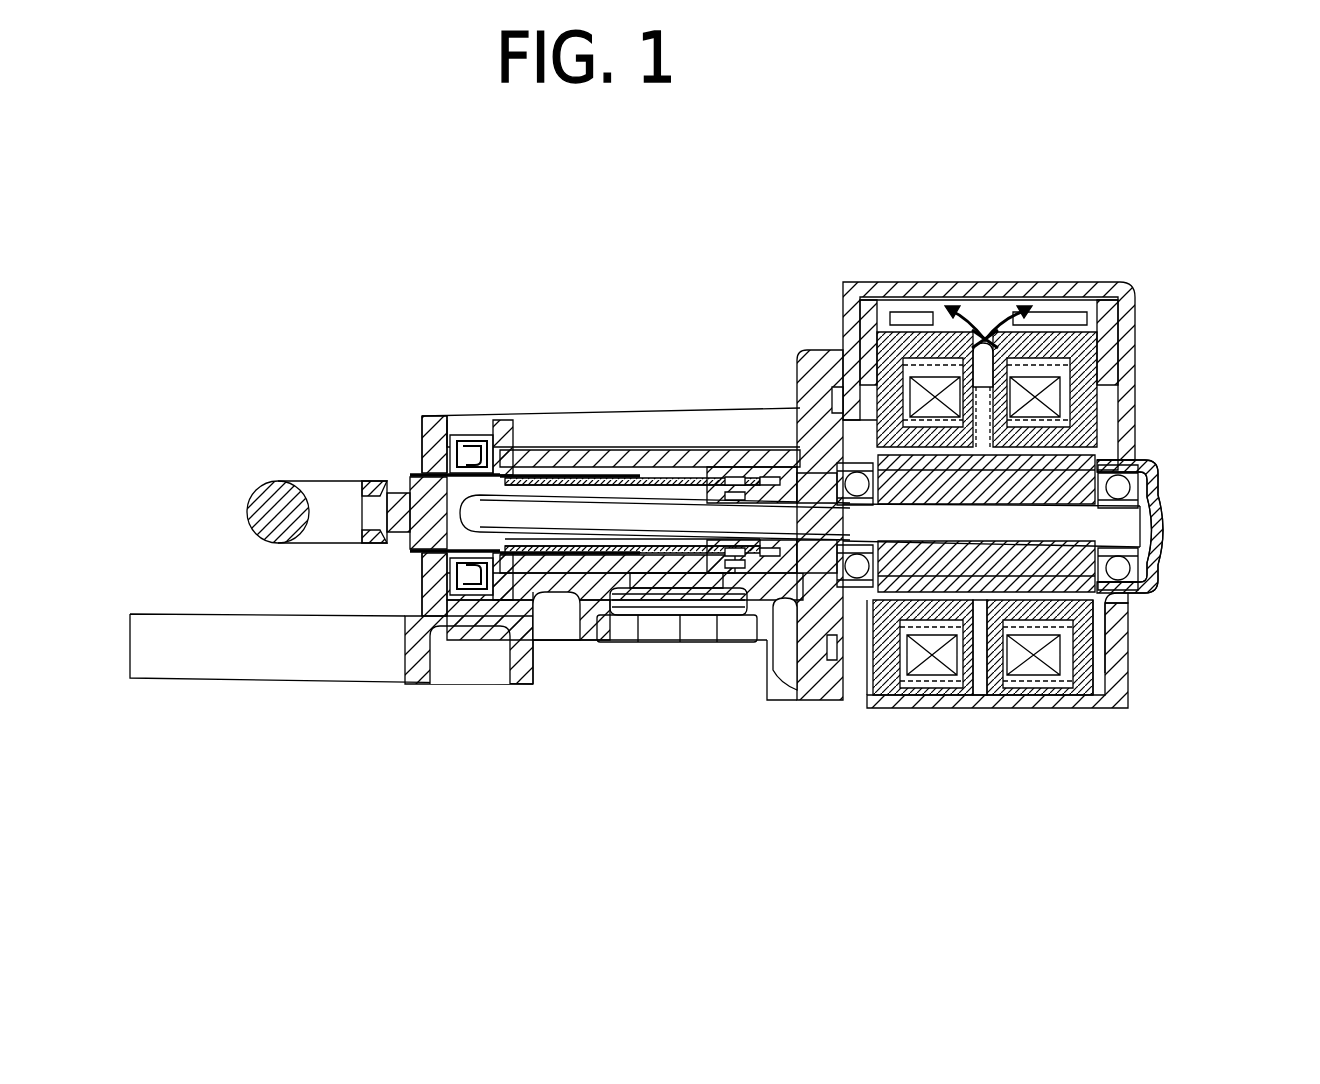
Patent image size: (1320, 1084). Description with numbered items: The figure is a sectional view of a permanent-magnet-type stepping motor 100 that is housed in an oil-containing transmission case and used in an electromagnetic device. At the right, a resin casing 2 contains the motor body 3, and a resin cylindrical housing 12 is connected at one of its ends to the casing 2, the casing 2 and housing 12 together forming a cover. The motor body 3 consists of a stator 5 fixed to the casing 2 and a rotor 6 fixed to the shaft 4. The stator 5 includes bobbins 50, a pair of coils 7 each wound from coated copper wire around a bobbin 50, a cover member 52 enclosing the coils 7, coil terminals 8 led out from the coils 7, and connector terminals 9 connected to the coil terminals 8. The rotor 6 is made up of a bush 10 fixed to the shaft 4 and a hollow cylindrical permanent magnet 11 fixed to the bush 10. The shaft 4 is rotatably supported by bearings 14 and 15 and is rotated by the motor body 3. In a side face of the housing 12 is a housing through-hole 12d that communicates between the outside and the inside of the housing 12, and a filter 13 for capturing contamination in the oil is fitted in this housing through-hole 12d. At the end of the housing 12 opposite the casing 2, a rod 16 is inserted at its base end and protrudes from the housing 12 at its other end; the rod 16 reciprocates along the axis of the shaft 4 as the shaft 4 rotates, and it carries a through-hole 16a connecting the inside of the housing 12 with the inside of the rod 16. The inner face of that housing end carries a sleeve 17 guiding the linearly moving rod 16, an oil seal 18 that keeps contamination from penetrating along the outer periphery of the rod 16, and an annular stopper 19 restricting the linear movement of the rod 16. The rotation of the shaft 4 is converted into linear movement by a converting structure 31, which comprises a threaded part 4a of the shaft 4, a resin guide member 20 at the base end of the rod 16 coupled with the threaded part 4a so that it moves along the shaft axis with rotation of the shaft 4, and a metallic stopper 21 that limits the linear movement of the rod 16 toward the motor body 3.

The stepping motor 100 is at (699, 297).
The casing 2 is at (1130, 312).
The motor body 3 is at (1135, 382).
The shaft 4 is at (1115, 528).
The threaded part 4a is at (563, 535).
The stator 5 is at (1005, 710).
The rotor 6 is at (1075, 463).
The coils 7 is at (922, 708).
The coil terminals 8 is at (982, 326).
The connector terminals 9 is at (1063, 312).
The bush 10 is at (1138, 598).
The permanent magnet 11 is at (1105, 612).
The housing 12 is at (815, 347).
The housing through-hole 12d is at (653, 610).
The filter 13 is at (683, 650).
The bearing 14 is at (1158, 473).
The bearing 15 is at (806, 640).
The rod 16 is at (562, 470).
The through-hole 16a is at (700, 476).
The sleeve 17 is at (427, 453).
The oil seal 18 is at (470, 433).
The annular stopper 19 is at (512, 662).
The guide member 20 is at (755, 458).
The metallic stopper 21 is at (840, 468).
The converting structure 31 is at (720, 478).
The bobbins 50 is at (1062, 708).
The cover member 52 is at (878, 708).